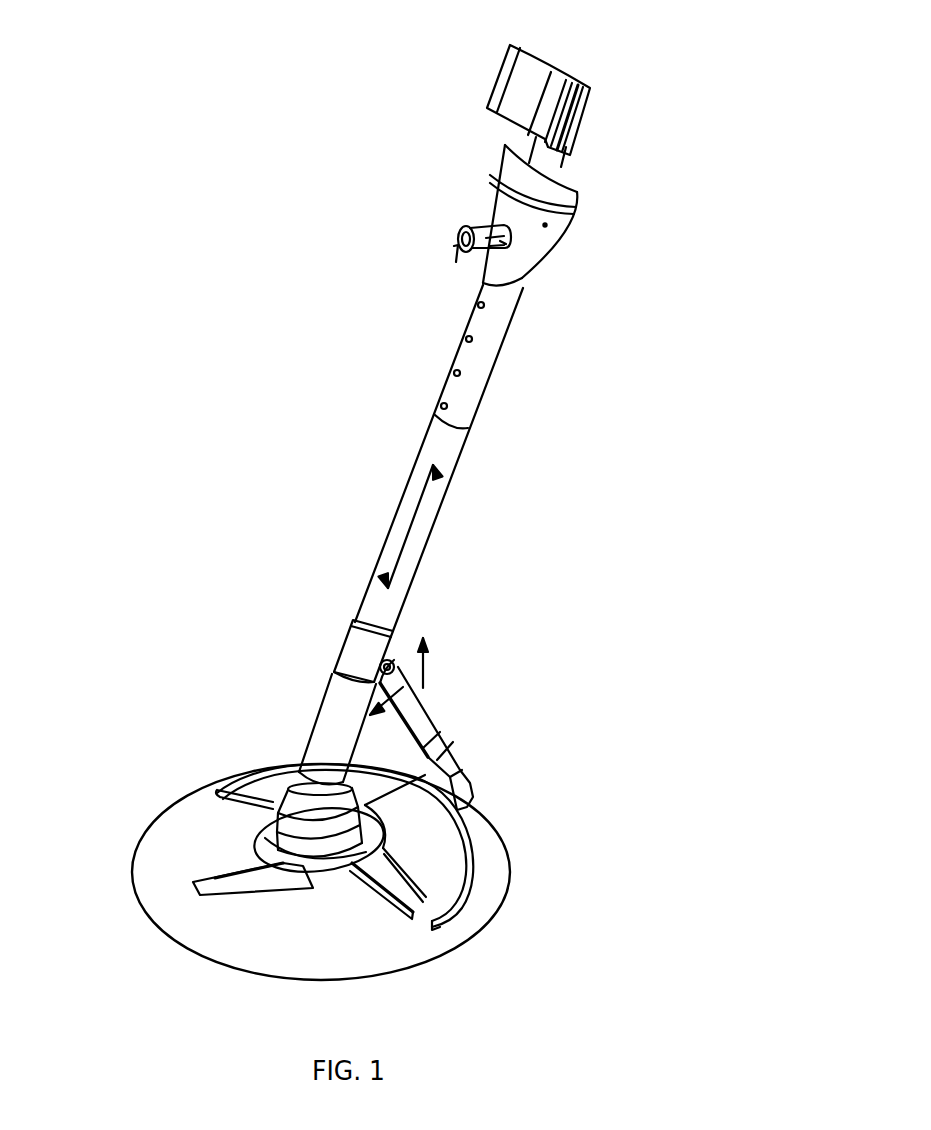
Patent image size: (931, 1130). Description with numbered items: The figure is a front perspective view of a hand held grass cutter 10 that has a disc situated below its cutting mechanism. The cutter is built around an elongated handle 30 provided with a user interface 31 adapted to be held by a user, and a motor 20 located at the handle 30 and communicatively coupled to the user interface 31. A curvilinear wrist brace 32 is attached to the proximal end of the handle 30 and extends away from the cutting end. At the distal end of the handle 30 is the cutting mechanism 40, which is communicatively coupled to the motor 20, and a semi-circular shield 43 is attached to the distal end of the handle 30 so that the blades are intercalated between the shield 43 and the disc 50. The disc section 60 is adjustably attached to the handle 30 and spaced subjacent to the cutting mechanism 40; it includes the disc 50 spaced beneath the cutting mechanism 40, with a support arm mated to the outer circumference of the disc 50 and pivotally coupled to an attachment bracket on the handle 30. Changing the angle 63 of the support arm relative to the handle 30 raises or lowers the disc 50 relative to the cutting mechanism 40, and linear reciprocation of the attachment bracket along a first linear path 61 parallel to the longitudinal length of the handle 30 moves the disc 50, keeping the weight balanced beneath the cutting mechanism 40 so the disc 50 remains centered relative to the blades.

The hand held grass cutter 10 is at (348, 205).
The motor 20 is at (290, 802).
The elongated handle 30 is at (510, 396).
The user interface 31 is at (483, 228).
The curvilinear wrist brace 32 is at (541, 86).
The cutting mechanism 40 is at (235, 838).
The shield 43 is at (437, 843).
The disc 50 is at (365, 957).
The disc section 60 is at (455, 724).
The first linear path 61 is at (407, 535).
The angle 63 is at (420, 687).